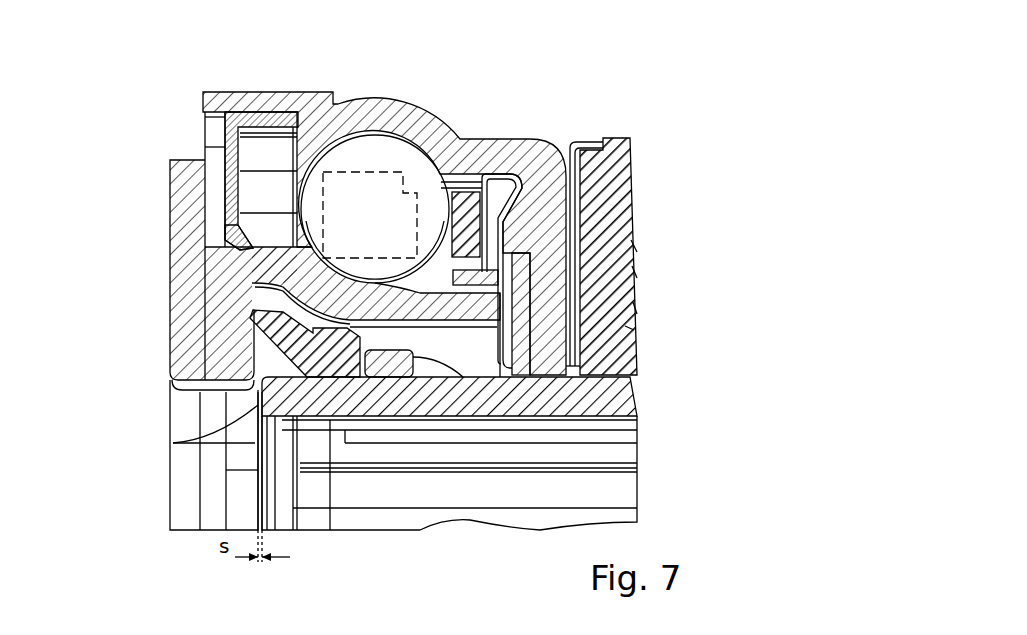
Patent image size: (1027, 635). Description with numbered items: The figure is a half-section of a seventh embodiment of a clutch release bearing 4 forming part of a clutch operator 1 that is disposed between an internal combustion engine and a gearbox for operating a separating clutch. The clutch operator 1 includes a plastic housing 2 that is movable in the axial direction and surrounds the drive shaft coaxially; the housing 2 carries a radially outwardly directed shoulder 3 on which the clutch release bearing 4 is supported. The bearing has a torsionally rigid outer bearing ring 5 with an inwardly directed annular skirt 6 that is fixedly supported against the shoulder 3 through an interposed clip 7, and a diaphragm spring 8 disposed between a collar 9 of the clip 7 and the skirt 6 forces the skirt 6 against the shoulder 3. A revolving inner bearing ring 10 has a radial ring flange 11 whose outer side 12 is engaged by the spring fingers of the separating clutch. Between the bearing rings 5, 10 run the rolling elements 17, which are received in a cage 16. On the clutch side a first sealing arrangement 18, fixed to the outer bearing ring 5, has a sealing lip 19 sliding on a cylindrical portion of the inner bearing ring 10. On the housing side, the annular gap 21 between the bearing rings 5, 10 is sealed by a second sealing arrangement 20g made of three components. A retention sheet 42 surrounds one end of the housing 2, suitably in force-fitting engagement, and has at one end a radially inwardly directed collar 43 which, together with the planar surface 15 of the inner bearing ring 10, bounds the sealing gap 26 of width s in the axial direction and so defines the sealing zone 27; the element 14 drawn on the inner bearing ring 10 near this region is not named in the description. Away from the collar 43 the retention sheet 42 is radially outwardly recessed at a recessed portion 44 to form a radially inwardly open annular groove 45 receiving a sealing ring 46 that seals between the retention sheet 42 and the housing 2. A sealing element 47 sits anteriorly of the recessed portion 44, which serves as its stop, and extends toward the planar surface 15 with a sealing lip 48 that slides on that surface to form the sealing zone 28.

The clutch operator 1 is at (460, 94).
The housing 2 is at (607, 397).
The shoulder 3 is at (607, 220).
The clutch release bearing 4 is at (151, 70).
The outer bearing ring 5 is at (395, 117).
The annular skirt 6 is at (637, 248).
The clip 7 is at (580, 178).
The diaphragm spring 8 is at (637, 310).
The collar 9 is at (580, 366).
The inner bearing ring 10 is at (632, 328).
The ring flange 11 is at (183, 189).
The outer side 12 is at (207, 235).
The thin wall part 14 is at (258, 404).
The planar surface 15 is at (266, 300).
The cage 16 is at (462, 203).
The rolling elements 17 is at (370, 143).
The first sealing arrangement 18 is at (260, 146).
The sealing lip 19 is at (245, 247).
The second sealing arrangement 20g is at (328, 530).
The annular gap 21 is at (637, 272).
The sealing gap 26 is at (258, 470).
The sealing zone 27 is at (172, 386).
The sealing zone 28 is at (195, 305).
The sealing lip 48 is at (257, 298).
The retention sheet 42 is at (312, 530).
The collar 43 is at (255, 441).
The recessed portion 44 is at (458, 418).
The annular groove 45 is at (420, 380).
The sealing ring 46 is at (385, 405).
The sealing element 47 is at (272, 348).